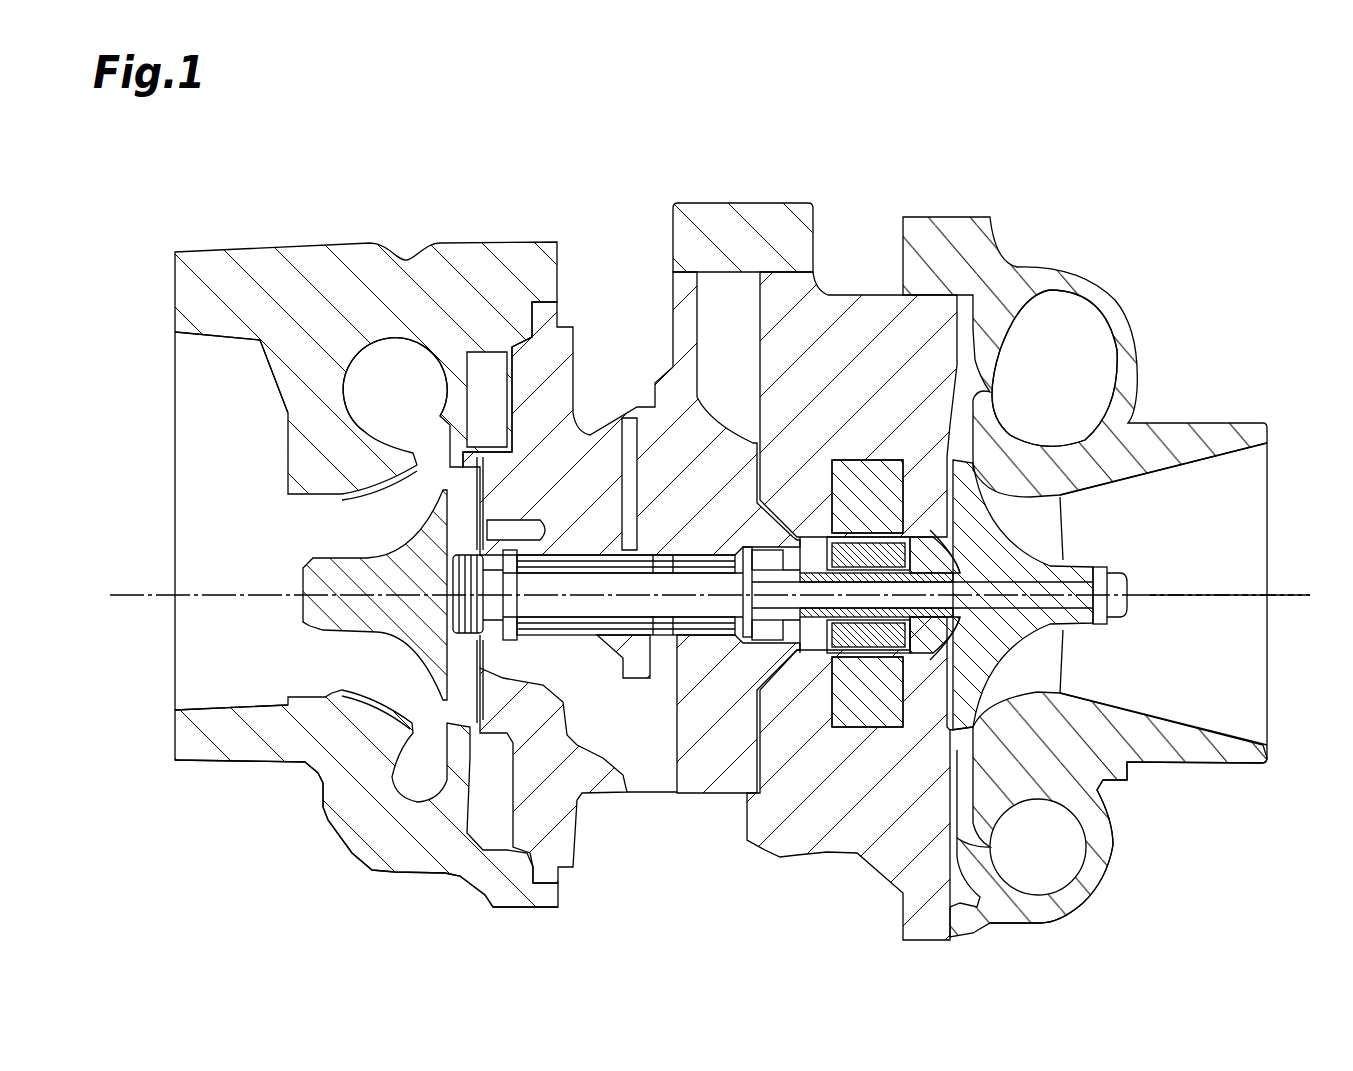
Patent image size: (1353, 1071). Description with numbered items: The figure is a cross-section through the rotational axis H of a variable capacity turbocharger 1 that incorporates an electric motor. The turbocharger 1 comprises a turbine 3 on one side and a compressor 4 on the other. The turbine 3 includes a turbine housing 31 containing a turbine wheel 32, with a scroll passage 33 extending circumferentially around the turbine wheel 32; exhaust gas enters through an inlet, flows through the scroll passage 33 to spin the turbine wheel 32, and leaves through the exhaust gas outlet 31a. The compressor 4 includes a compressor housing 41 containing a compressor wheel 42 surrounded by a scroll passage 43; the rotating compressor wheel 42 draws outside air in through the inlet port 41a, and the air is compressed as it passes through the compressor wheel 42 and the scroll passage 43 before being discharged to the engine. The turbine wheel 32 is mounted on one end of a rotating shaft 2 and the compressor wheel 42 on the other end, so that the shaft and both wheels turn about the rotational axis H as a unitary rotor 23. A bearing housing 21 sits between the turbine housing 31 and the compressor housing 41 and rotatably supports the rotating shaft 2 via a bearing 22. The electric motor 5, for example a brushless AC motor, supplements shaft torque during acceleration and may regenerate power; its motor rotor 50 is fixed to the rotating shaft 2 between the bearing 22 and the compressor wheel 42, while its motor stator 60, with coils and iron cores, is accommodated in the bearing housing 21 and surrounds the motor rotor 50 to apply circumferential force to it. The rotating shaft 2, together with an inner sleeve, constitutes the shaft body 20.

The turbocharger 1 is at (381, 190).
The rotational axis H is at (1303, 592).
The rotating shaft 2 is at (713, 608).
The shaft body 20 is at (660, 628).
The bearing housing 21 is at (653, 425).
The bearing 22 is at (605, 640).
The rotor 23 is at (1121, 564).
The turbine 3 is at (403, 892).
The turbine housing 31 is at (303, 265).
The exhaust gas outlet 31a is at (307, 502).
The turbine wheel 32 is at (352, 662).
The scroll passage 33 is at (390, 355).
The compressor 4 is at (1172, 815).
The compressor housing 41 is at (1080, 275).
The inlet port 41a is at (1242, 462).
The compressor wheel 42 is at (1045, 660).
The scroll passage 43 is at (1097, 345).
The electric motor 5 is at (830, 760).
The motor rotor 50 is at (815, 644).
The motor stator 60 is at (870, 718).